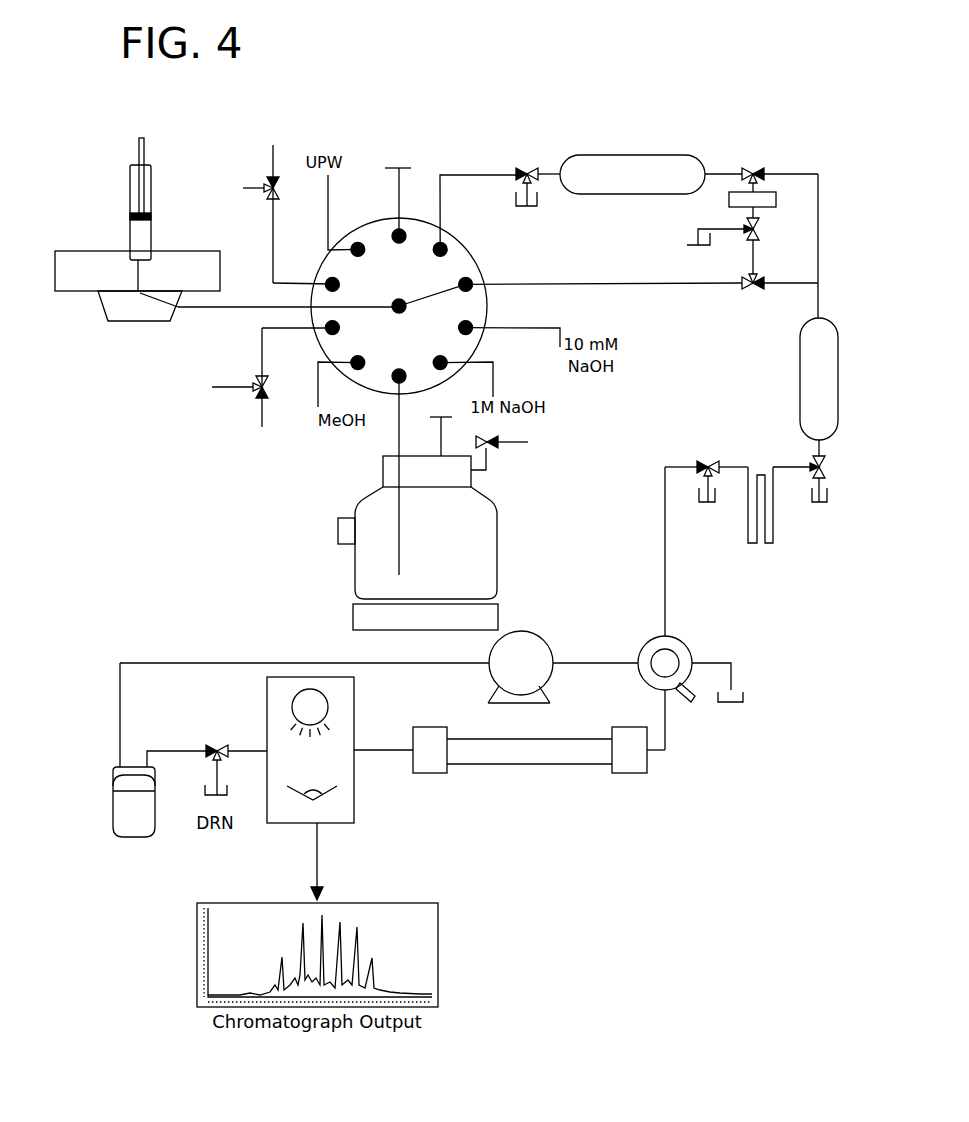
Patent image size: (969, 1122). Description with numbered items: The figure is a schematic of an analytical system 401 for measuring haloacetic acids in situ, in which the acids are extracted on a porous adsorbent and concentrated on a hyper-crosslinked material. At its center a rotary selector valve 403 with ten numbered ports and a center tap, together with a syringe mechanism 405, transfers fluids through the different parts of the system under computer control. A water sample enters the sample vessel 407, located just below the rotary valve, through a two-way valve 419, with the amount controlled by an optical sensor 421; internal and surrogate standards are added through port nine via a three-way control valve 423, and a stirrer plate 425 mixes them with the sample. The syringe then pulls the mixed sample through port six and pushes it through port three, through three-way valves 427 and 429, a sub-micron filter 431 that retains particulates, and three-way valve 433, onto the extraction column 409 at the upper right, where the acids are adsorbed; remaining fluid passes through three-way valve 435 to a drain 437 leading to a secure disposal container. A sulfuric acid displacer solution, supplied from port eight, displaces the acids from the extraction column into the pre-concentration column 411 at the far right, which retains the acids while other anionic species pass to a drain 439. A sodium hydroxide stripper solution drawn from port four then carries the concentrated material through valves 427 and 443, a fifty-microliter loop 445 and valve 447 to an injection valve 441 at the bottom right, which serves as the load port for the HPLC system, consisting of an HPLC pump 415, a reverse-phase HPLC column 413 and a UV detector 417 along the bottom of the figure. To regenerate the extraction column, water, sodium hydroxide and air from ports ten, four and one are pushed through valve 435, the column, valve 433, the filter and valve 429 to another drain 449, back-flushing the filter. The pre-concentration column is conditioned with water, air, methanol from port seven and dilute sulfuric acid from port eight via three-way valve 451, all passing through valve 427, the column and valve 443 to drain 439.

The analytical system 401 is at (614, 90).
The rotary selector valve 403 is at (413, 281).
The syringe mechanism 405 is at (118, 250).
The sample vessel 407 is at (500, 535).
The extraction column 409 is at (651, 174).
The pre-concentration column 411 is at (800, 380).
The reverse-phase HPLC column 413 is at (500, 750).
The HPLC pump 415 is at (379, 667).
The UV detector 417 is at (310, 788).
The two-way valve 419 is at (493, 447).
The optical sensor 421 is at (338, 530).
The three-way control valve 423 is at (262, 185).
The stirrer plate 425 is at (352, 618).
The three-way valve 427 is at (757, 287).
The three-way valve 429 is at (763, 233).
The sub-micron filter 431 is at (728, 200).
The three-way valve 433 is at (754, 171).
The three-way valve 435 is at (528, 170).
The drain 437 is at (525, 207).
The drain 439 is at (821, 504).
The injection valve 441 is at (647, 642).
The three-way valve 443 is at (814, 463).
The loop 445 is at (775, 521).
The valve 447 is at (709, 458).
The drain 449 is at (685, 238).
The three-way valve 451 is at (266, 392).